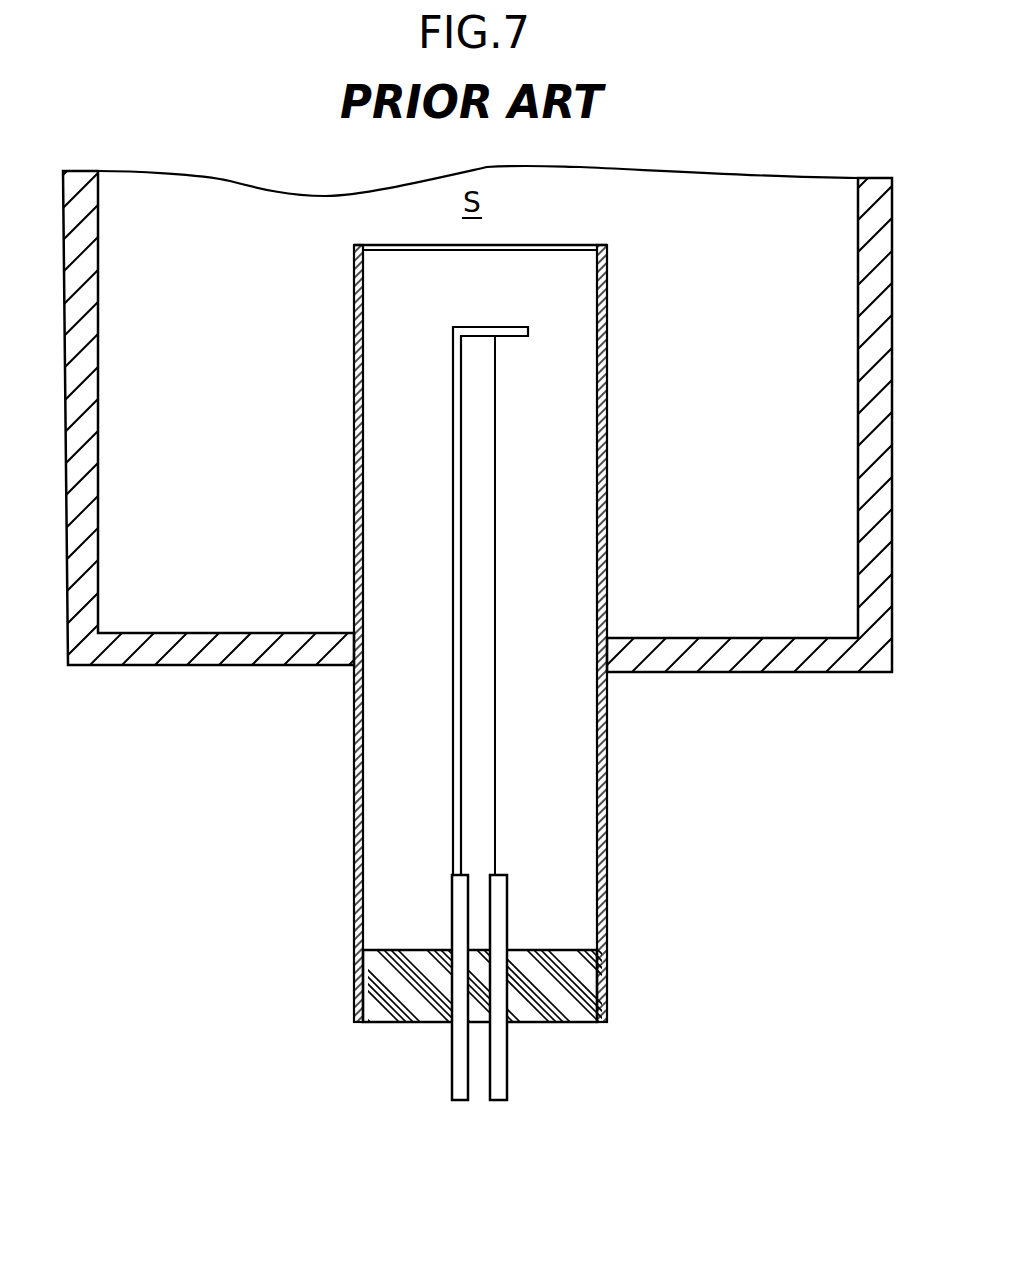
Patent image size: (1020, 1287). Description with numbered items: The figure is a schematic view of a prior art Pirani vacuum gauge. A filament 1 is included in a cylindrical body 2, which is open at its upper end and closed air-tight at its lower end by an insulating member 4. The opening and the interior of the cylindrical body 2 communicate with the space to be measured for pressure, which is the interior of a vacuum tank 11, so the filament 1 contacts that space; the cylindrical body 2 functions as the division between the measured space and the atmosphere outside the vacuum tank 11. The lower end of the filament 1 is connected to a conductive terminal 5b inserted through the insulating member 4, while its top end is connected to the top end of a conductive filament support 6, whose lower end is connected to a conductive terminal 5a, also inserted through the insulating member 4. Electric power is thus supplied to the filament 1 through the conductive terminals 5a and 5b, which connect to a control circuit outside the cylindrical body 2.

The filament 1 is at (497, 507).
The cylindrical body 2 is at (607, 343).
The insulating member 4 is at (570, 990).
The conductive terminal 5a is at (462, 1102).
The conductive terminal 5b is at (497, 1102).
The conductive filament support 6 is at (453, 393).
The vacuum tank 11 is at (217, 650).